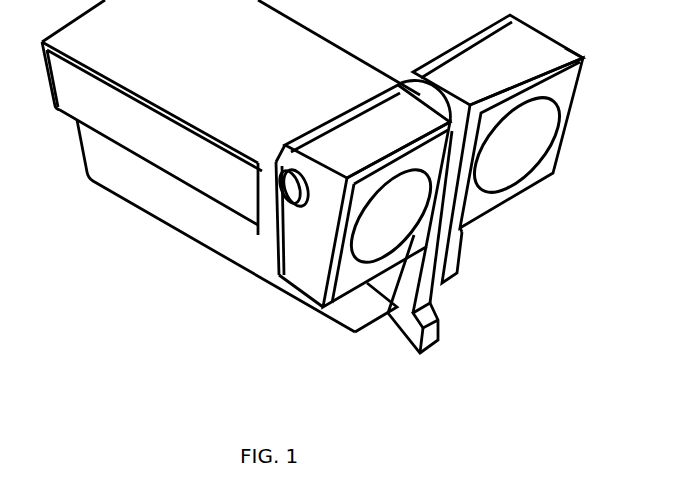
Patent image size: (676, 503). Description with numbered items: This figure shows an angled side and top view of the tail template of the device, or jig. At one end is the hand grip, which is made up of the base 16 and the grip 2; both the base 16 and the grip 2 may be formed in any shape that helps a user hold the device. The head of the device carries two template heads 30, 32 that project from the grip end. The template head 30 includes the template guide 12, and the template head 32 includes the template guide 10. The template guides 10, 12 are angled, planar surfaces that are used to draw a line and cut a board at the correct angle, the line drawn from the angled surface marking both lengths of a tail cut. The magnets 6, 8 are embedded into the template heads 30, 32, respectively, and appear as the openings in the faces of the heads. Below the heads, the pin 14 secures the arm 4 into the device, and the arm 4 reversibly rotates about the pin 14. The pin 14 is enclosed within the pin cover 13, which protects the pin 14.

The grip 2 is at (231, 137).
The arm 4 is at (440, 326).
The magnet 6 is at (391, 216).
The magnet 8 is at (517, 144).
The template guide 10 is at (512, 170).
The template guide 12 is at (386, 214).
The pin cover 13 is at (410, 98).
The pin 14 is at (278, 197).
The base 16 is at (237, 226).
The template head 30 is at (363, 131).
The template head 32 is at (498, 60).